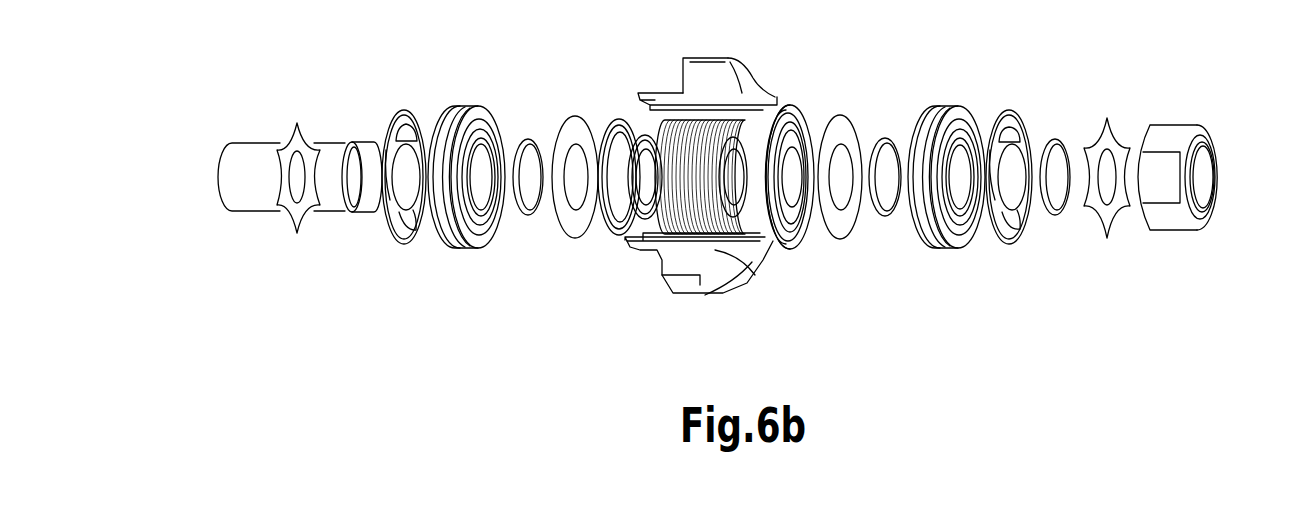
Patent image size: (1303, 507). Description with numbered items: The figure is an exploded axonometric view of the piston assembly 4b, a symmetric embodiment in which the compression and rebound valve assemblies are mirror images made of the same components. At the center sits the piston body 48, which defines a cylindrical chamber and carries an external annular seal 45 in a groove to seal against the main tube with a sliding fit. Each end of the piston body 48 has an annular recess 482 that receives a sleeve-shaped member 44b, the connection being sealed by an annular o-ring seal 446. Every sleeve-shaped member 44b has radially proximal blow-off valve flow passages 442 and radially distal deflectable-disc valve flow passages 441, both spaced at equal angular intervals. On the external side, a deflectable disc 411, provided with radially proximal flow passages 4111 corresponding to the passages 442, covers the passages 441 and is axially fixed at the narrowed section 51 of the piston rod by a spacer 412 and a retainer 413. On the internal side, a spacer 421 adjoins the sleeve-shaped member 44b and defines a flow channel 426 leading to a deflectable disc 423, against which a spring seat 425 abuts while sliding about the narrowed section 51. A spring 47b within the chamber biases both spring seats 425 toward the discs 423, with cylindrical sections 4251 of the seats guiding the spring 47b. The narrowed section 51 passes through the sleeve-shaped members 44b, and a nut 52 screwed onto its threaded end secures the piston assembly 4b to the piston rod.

The narrowed section of the piston rod 51 is at (225, 143).
The retainer 413 is at (297, 128).
The spacer 412 is at (348, 140).
The deflectable disc 411 is at (397, 125).
The radially proximal flow passages 4111 is at (412, 225).
The annular o-ring seal 446 is at (1020, 30).
The sleeve-shaped member 44b is at (452, 110).
The deflectable-disc valve flow passages 441 is at (459, 246).
The blow-off valve flow passages 442 is at (503, 240).
The spacer 421 is at (523, 138).
The deflectable disc 423 is at (568, 112).
The spring seat 425 is at (613, 112).
The cylindrical section 4251 is at (630, 115).
The spring 47b is at (677, 93).
The external annular seal 45 is at (704, 58).
The piston body 48 is at (735, 70).
The annular recess 482 is at (628, 248).
The flow channel 426 is at (498, 248).
The nut 52 is at (1177, 145).
The piston assembly 4b is at (1209, 114).